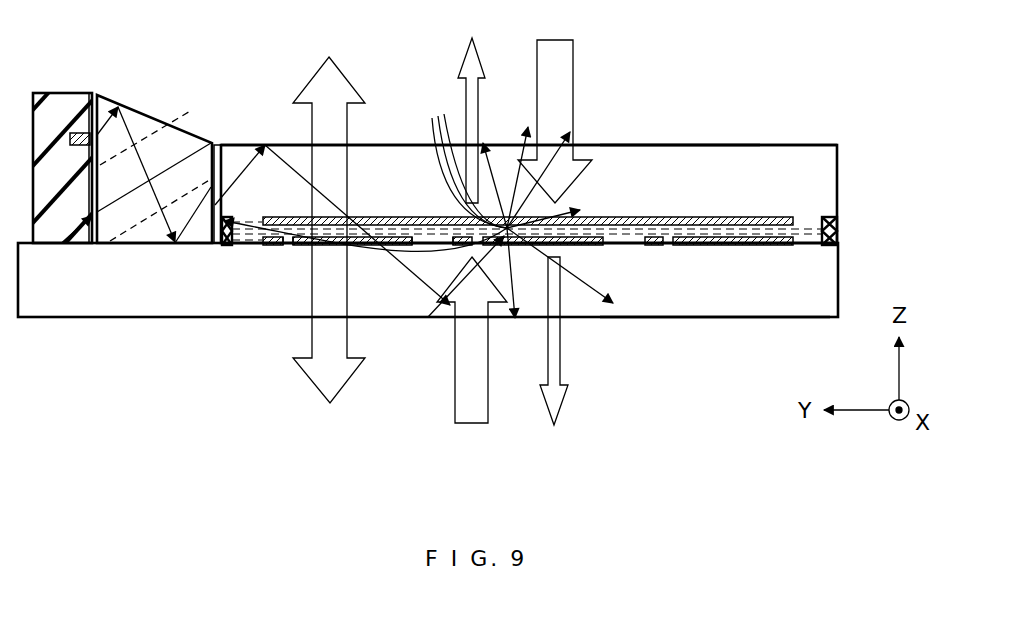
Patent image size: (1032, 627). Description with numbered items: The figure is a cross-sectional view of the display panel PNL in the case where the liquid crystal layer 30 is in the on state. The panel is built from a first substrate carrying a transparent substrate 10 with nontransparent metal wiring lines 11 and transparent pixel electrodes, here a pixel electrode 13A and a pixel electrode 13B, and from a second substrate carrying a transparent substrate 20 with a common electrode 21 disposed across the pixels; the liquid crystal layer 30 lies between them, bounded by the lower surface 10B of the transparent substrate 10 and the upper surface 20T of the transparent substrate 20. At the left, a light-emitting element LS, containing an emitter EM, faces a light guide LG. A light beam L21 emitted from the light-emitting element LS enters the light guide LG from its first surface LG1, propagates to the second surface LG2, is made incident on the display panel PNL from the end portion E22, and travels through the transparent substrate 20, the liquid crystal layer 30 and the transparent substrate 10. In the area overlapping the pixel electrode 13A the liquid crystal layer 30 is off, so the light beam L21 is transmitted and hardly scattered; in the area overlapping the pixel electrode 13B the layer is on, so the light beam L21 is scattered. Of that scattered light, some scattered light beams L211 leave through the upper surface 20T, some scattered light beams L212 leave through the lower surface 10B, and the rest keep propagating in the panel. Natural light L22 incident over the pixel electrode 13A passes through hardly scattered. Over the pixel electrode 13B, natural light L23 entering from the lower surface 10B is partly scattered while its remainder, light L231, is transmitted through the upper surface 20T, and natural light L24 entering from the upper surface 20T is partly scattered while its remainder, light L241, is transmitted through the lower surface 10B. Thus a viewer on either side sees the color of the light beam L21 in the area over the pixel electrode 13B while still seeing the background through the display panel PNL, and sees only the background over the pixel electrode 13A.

The transparent substrate 10 is at (153, 318).
The lower surface 10B is at (704, 322).
The wiring lines 11 is at (272, 247).
The pixel electrode 13A is at (292, 247).
The pixel electrode 13B is at (452, 247).
The transparent substrate 20 is at (756, 150).
The upper surface 20T is at (710, 142).
The common electrode 21 is at (775, 214).
The liquid crystal layer 30 is at (830, 230).
The display panel PNL is at (838, 146).
The light-emitting element LS is at (55, 92).
The light emitting element EM is at (77, 132).
The light guide LG is at (134, 108).
The first surface LG1 is at (80, 225).
The second surface LG2 is at (246, 243).
The end portion E22 is at (210, 148).
The light beam L21 is at (240, 150).
The scattered light beams L211 is at (456, 160).
The scattered light beams L212 is at (518, 320).
The natural light L22 is at (318, 408).
The natural light L23 is at (470, 426).
The light L231 is at (461, 60).
The natural light L24 is at (574, 68).
The light L241 is at (561, 360).